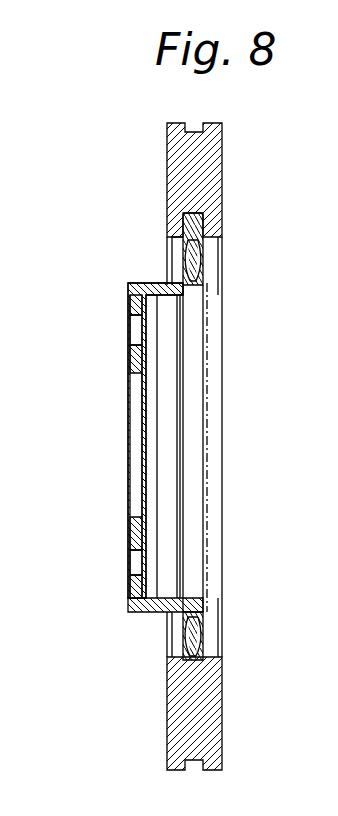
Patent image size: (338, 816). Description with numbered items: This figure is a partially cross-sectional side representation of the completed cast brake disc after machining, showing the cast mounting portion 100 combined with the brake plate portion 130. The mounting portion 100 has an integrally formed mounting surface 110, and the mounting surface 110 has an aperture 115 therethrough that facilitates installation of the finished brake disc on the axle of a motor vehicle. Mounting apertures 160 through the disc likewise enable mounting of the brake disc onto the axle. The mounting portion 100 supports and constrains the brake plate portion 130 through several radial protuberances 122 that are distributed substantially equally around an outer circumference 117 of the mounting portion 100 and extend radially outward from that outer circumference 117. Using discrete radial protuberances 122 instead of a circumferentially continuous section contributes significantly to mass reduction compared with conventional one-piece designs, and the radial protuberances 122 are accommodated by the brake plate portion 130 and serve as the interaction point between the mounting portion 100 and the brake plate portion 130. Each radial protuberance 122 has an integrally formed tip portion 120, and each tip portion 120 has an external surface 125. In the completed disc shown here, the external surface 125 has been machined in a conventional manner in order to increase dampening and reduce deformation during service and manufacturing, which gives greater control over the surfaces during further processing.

The mounting portion 100 is at (162, 498).
The mounting surface 110 is at (131, 527).
The aperture 115 is at (130, 443).
The outer circumference 117 is at (163, 603).
The tip portion 120 is at (199, 224).
The radial protuberances 122 is at (197, 262).
The external surface 125 is at (179, 221).
The brake plate portion 130 is at (190, 172).
The mounting apertures 160 is at (132, 563).